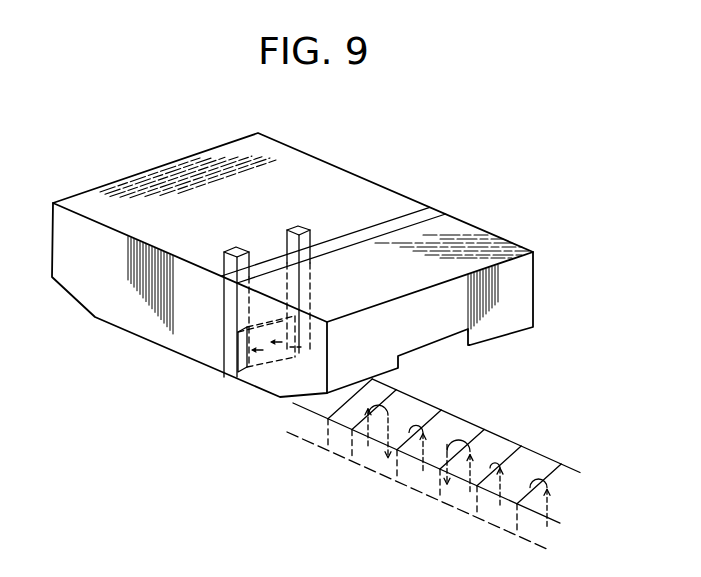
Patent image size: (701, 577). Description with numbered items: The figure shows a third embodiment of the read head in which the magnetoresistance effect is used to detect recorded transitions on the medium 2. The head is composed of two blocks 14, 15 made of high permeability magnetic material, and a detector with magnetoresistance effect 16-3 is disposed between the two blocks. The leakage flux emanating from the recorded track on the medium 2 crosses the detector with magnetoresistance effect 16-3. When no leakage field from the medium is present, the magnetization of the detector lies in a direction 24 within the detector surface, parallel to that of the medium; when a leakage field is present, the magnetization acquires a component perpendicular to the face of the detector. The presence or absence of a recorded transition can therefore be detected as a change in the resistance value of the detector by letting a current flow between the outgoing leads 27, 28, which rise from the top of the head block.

The medium 2 is at (423, 420).
The block 14 is at (367, 195).
The block 15 is at (460, 233).
The detector with magnetoresistance effect 16-3 is at (303, 338).
The magnetization direction 24 is at (262, 355).
The outgoing lead 27 is at (233, 247).
The outgoing lead 28 is at (298, 225).